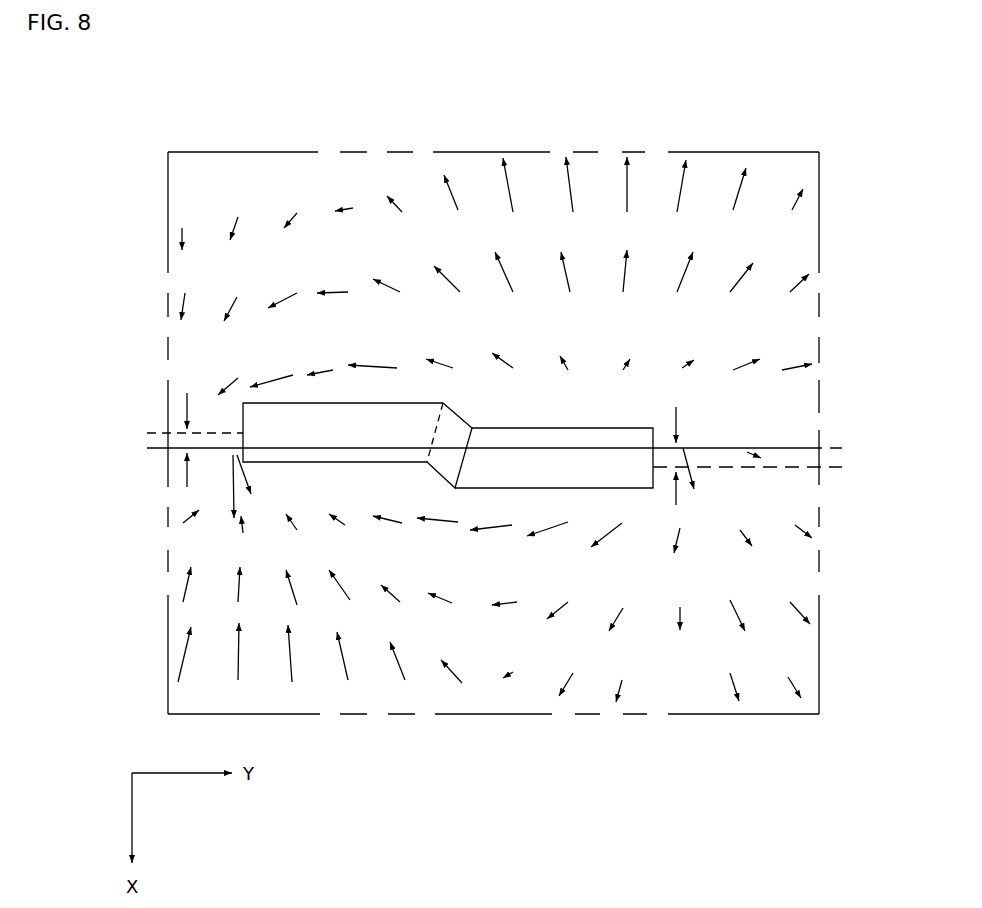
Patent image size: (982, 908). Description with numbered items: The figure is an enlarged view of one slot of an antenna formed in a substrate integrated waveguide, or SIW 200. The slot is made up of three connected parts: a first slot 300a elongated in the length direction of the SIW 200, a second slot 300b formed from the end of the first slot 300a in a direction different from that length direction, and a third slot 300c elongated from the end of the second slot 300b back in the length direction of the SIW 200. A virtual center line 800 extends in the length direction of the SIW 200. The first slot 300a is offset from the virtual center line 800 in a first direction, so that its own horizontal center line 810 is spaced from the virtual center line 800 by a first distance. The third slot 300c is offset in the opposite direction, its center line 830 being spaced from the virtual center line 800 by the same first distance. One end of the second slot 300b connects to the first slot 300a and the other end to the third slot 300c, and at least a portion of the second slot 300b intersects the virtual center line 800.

The substrate integrated waveguide 200 is at (662, 714).
The first slot 300a is at (347, 425).
The second slot 300b is at (455, 430).
The third slot 300c is at (578, 442).
The virtual center line 800 is at (153, 448).
The virtual center line of the first slot 810 is at (153, 433).
The center line of the third slot 830 is at (840, 467).